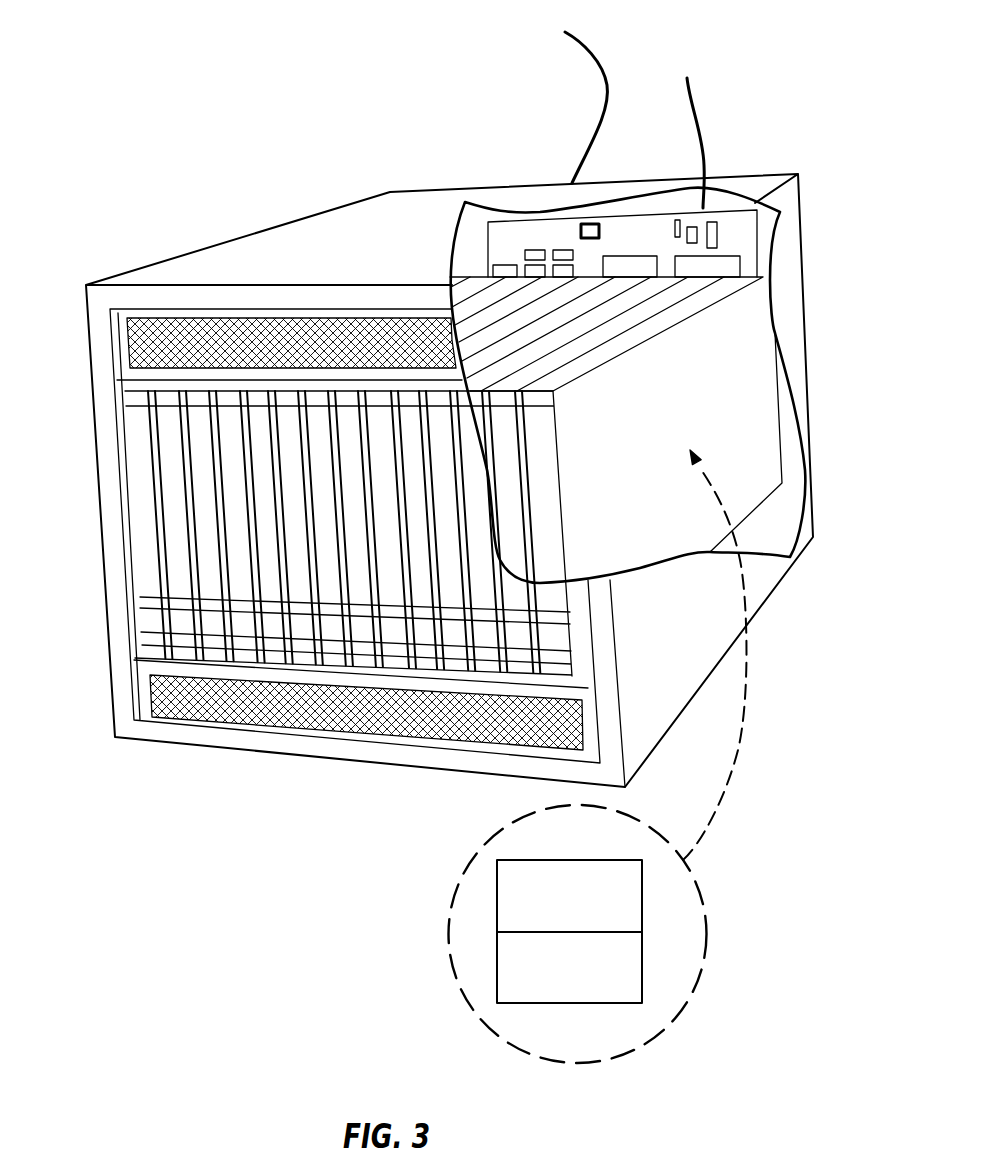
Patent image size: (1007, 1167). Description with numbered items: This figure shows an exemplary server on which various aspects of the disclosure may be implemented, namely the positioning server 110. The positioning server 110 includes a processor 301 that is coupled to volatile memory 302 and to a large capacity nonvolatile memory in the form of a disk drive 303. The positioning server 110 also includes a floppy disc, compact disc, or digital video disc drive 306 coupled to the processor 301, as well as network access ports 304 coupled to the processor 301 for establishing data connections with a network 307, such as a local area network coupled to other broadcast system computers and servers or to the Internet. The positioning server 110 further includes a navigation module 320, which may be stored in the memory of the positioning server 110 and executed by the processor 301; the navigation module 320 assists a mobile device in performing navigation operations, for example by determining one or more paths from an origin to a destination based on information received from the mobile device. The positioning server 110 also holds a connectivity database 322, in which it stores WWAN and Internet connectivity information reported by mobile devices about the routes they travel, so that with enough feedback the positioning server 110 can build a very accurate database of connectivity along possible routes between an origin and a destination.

The positioning server 110 is at (156, 84).
The processor 301 is at (630, 262).
The volatile memory 302 is at (725, 265).
The disk drive 303 is at (208, 477).
The network access ports 304 is at (495, 263).
The disc drive 306 is at (180, 527).
The network 307 is at (602, 58).
The navigation module 320 is at (575, 860).
The connectivity database 322 is at (575, 1003).